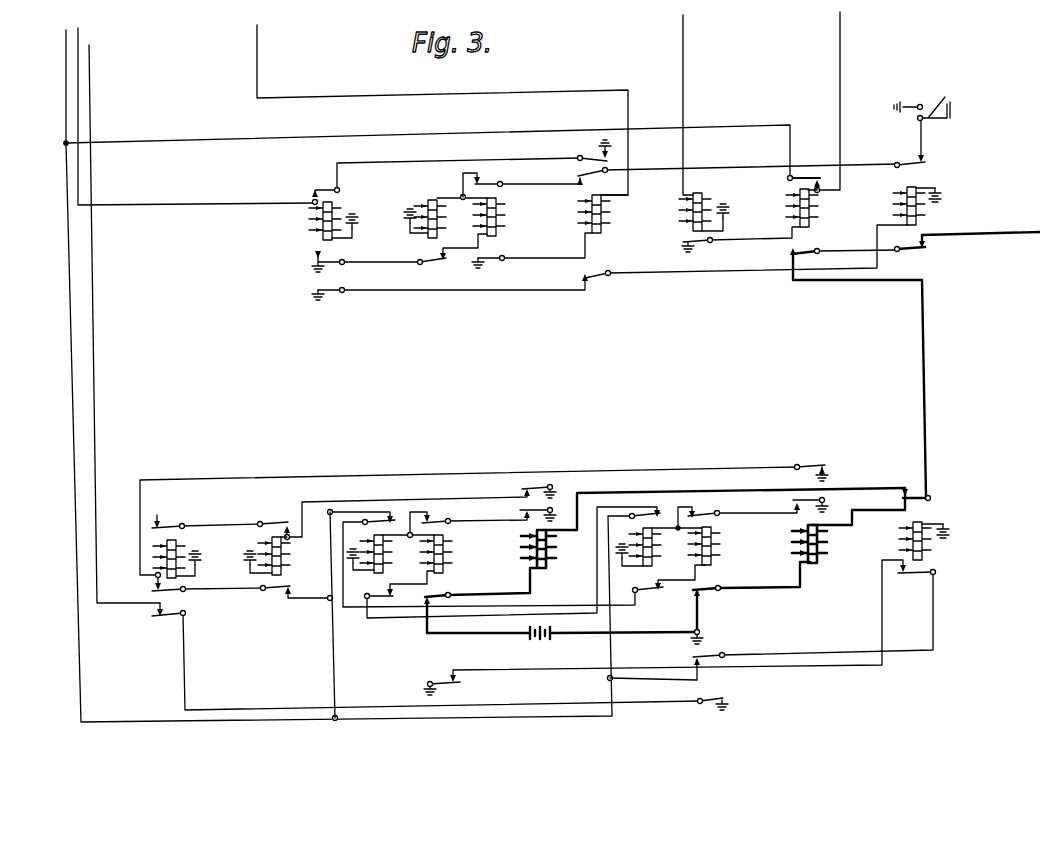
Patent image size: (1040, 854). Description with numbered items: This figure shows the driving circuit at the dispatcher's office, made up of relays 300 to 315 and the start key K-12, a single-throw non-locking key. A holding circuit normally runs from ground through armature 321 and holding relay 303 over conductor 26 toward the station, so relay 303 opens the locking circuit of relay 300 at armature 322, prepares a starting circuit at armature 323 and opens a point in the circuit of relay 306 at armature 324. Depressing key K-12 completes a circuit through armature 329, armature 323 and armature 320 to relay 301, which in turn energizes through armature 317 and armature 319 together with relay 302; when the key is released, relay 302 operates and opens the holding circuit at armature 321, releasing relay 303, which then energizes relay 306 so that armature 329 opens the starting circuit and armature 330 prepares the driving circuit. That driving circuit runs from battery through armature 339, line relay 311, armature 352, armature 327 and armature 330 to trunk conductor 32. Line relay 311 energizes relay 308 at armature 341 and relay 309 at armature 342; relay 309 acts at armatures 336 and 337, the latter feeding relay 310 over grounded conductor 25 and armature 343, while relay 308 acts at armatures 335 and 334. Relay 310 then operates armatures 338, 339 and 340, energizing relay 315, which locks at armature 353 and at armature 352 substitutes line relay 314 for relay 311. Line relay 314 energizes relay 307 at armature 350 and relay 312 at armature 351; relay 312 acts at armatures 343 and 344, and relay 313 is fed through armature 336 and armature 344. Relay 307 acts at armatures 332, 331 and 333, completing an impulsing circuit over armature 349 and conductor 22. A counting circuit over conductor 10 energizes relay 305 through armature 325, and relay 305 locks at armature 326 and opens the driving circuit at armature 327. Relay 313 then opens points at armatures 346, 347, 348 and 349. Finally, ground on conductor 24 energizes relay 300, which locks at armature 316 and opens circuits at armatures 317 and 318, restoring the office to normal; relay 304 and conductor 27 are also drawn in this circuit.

The conductor 10 is at (839, 24).
The conductor 22 is at (90, 50).
The conductor 24 is at (76, 62).
The conductor 25 is at (64, 40).
The conductor 26 is at (256, 38).
The conductor 27 is at (682, 38).
The trunk conductor 32 is at (1036, 232).
The start key K-12 is at (935, 104).
The relay 300 is at (308, 216).
The relay 301 is at (443, 208).
The relay 302 is at (496, 216).
The holding relay 303 is at (592, 214).
The relay 304 is at (680, 216).
The relay 305 is at (786, 215).
The relay 306 is at (892, 214).
The relay 307 is at (180, 575).
The relay 308 is at (261, 548).
The relay 309 is at (390, 542).
The relay 310 is at (443, 550).
The line relay 311 is at (530, 560).
The relay 312 is at (659, 536).
The relay 313 is at (716, 552).
The line relay 314 is at (822, 552).
The relay 315 is at (934, 544).
The armature 316 is at (322, 188).
The armature 317 is at (316, 258).
The armature 318 is at (320, 293).
The armature 319 is at (436, 271).
The armature 320 is at (521, 182).
The armature 321 is at (488, 256).
The armature 322 is at (586, 156).
The armature 323 is at (578, 176).
The armature 324 is at (592, 280).
The armature 325 is at (706, 246).
The armature 326 is at (802, 176).
The armature 327 is at (806, 250).
The armature 329 is at (896, 163).
The armature 330 is at (906, 252).
The armature 331 is at (170, 520).
The armature 332 is at (180, 590).
The armature 333 is at (168, 614).
The armature 334 is at (276, 518).
The armature 335 is at (286, 590).
The armature 336 is at (382, 515).
The armature 337 is at (380, 618).
The armature 338 is at (438, 518).
The armature 339 is at (429, 592).
The armature 340 is at (446, 682).
The armature 341 is at (534, 486).
The armature 342 is at (520, 510).
The armature 343 is at (650, 510).
The armature 344 is at (642, 592).
The armature 346 is at (714, 506).
The armature 347 is at (700, 586).
The armature 348 is at (706, 654).
The armature 349 is at (708, 700).
The armature 350 is at (810, 465).
The armature 351 is at (828, 496).
The armature 352 is at (920, 496).
The armature 353 is at (926, 574).